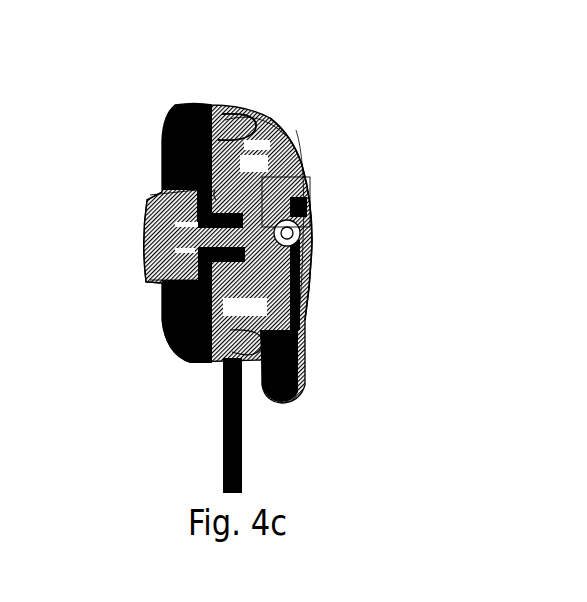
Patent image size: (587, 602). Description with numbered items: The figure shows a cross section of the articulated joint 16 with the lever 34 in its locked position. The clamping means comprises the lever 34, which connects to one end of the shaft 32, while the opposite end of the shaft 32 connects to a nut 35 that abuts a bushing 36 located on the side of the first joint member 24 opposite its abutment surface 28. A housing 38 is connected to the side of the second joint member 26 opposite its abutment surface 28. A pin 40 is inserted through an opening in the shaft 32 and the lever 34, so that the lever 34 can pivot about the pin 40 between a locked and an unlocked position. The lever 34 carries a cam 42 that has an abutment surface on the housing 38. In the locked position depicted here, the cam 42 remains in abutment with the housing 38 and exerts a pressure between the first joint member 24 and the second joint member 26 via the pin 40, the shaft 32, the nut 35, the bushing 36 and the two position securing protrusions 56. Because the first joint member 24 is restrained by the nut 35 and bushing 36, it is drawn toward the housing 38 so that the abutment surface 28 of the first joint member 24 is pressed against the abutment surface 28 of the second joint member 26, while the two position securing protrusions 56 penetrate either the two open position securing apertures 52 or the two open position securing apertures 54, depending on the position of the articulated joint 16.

The articulated joint 16 is at (152, 108).
The first joint member 24 is at (212, 360).
The second joint member 26 is at (222, 325).
The abutment surface 28 is at (226, 127).
The shaft 32 is at (150, 207).
The lever 34 is at (303, 272).
The nut 35 is at (165, 197).
The bushing 36 is at (307, 190).
The housing 38 is at (288, 145).
The pin 40 is at (290, 228).
The cam 42 is at (232, 283).
The open position securing apertures 52 is at (240, 120).
The open position securing apertures 54 is at (300, 243).
The position securing protrusions 56 is at (217, 190).